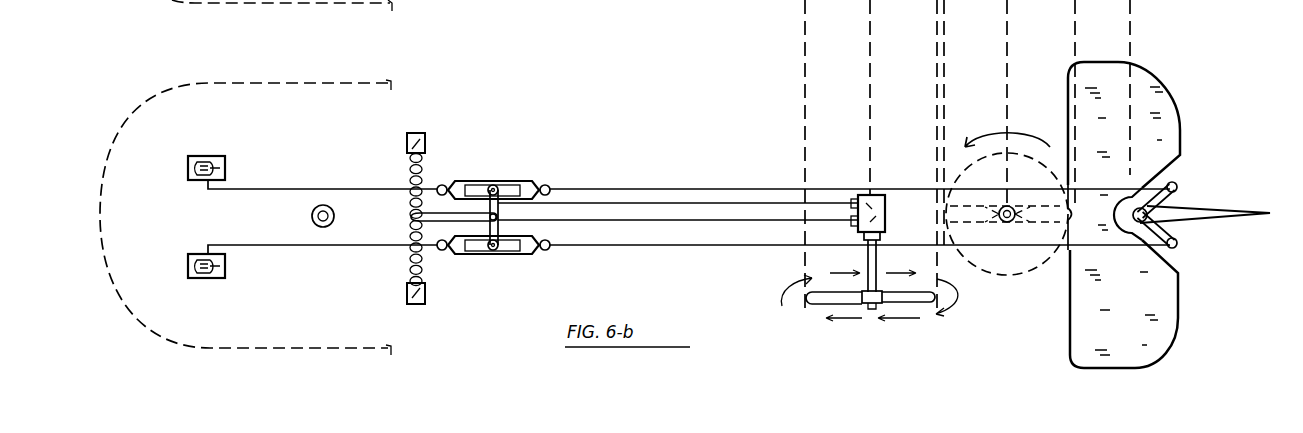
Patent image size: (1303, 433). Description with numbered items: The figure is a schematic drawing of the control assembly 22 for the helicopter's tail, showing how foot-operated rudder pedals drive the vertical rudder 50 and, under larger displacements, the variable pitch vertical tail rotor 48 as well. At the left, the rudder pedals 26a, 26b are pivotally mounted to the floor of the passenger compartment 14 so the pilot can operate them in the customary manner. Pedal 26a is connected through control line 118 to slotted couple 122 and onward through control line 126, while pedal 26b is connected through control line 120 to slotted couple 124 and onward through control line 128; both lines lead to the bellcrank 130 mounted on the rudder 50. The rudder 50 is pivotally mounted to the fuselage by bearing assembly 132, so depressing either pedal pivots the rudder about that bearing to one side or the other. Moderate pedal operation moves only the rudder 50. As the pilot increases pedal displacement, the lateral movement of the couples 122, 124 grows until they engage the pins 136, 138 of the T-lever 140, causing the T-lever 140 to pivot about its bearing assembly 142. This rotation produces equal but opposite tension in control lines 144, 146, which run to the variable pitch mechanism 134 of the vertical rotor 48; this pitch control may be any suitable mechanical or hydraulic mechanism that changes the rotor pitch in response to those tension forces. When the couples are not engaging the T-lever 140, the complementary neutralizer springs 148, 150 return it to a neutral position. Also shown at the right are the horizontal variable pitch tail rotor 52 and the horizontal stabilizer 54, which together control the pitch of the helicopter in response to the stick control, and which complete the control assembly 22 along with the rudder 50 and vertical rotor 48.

The passenger compartment 14 is at (145, 331).
The rudder pedal 26a is at (205, 157).
The rudder pedal 26b is at (198, 280).
The control line 118 is at (302, 188).
The control line 120 is at (305, 246).
The slotted couple 122 is at (469, 167).
The slotted couple 124 is at (457, 255).
The control line 126 is at (683, 189).
The control line 128 is at (681, 247).
The bellcrank 130 is at (1178, 190).
The bearing assembly 132 is at (1178, 236).
The variable pitch mechanism 134 is at (877, 200).
The pin 136 is at (493, 186).
The pin 138 is at (493, 250).
The T-lever 140 is at (535, 236).
The bearing assembly 142 is at (414, 219).
The control line 144 is at (606, 172).
The control line 146 is at (603, 221).
The neutralizer spring 148 is at (410, 170).
The neutralizer spring 150 is at (410, 258).
The vertical tail rotor 48 is at (817, 305).
The control assembly 22 is at (973, 333).
The horizontal tail rotor 52 is at (957, 238).
The horizontal stabilizer 54 is at (1150, 92).
The rudder 50 is at (1192, 208).